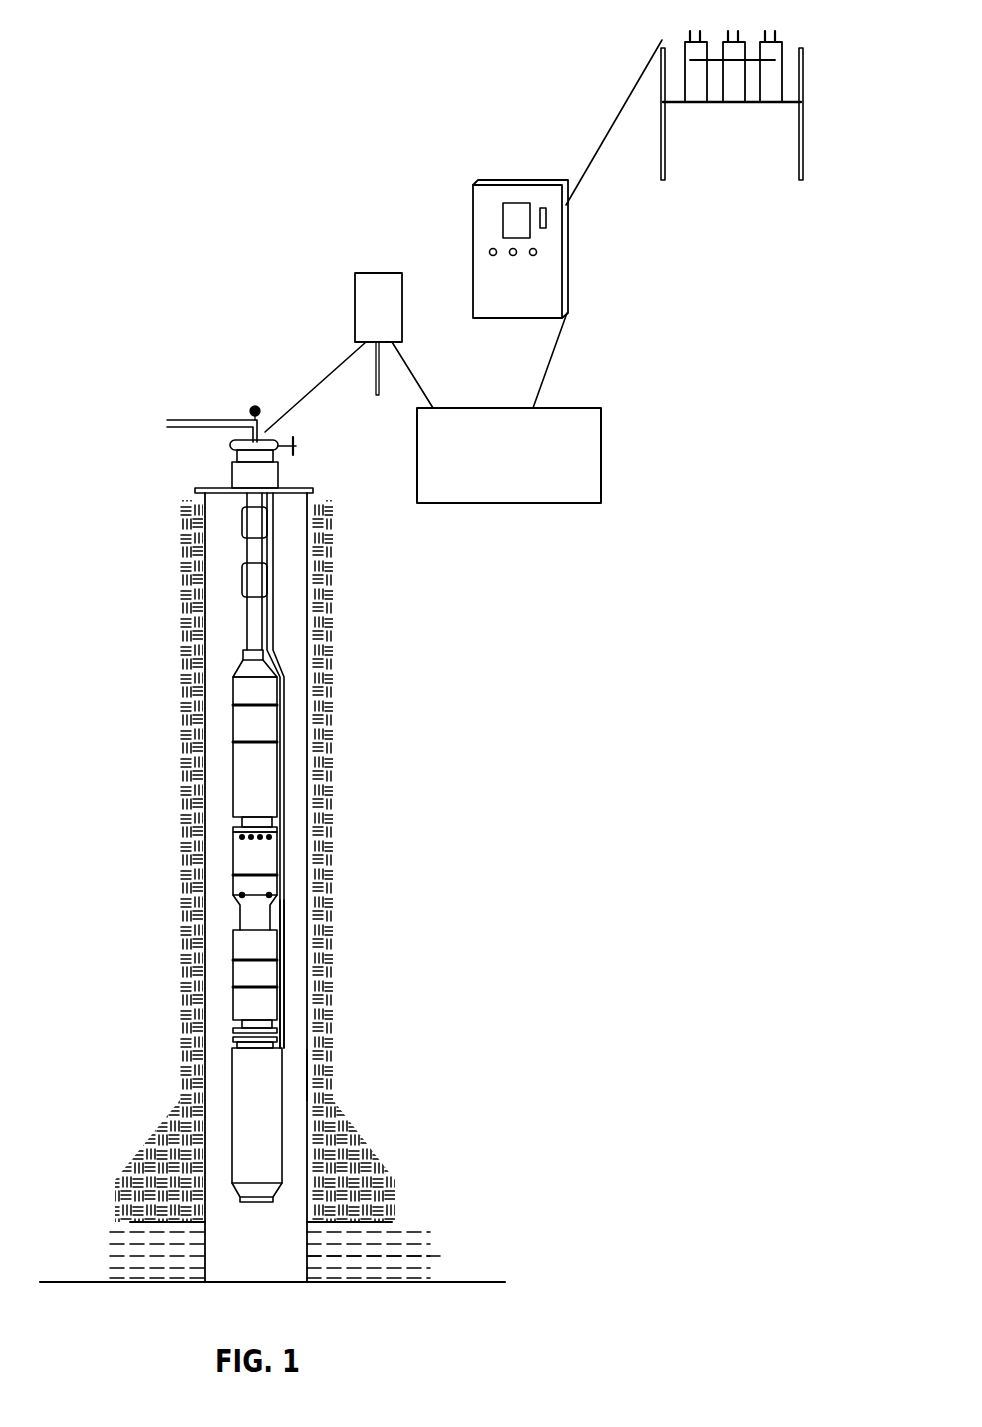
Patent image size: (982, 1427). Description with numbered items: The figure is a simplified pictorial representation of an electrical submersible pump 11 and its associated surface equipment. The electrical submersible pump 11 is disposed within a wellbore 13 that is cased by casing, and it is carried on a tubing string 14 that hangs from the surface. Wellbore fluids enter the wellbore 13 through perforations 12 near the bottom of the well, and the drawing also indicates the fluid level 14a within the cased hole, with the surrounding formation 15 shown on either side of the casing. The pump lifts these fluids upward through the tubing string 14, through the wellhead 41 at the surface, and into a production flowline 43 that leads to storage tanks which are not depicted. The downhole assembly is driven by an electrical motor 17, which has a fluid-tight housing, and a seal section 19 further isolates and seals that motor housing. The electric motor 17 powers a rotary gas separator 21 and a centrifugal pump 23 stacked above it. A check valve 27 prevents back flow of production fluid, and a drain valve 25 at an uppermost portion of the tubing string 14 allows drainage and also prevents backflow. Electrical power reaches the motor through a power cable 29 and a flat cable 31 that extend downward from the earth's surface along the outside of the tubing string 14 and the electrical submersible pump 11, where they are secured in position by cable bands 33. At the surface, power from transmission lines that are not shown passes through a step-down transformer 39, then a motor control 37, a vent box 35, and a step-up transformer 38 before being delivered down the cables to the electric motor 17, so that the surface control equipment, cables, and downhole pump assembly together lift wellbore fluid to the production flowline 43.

The electrical submersible pump 11 is at (302, 833).
The perforations 12 is at (307, 1242).
The wellbore 13 is at (310, 1086).
The tubing string 14 is at (253, 625).
The fluid level 14a is at (393, 1259).
The wellbore 15 is at (203, 545).
The electrical motor 17 is at (240, 1120).
The seal section 19 is at (242, 1005).
The rotary gas separator 21 is at (240, 853).
The centrifugal pump 23 is at (240, 727).
The drain valve 25 is at (262, 523).
The check valve 27 is at (260, 587).
The power cable 29 is at (272, 633).
The flat cable 31 is at (281, 970).
The cable bands 33 is at (278, 705).
The vent box 35 is at (355, 292).
The motor control 37 is at (568, 257).
The step-up transformer 38 is at (601, 445).
The step-down transformer 39 is at (690, 60).
The wellhead 41 is at (298, 446).
The production flowline 43 is at (228, 420).